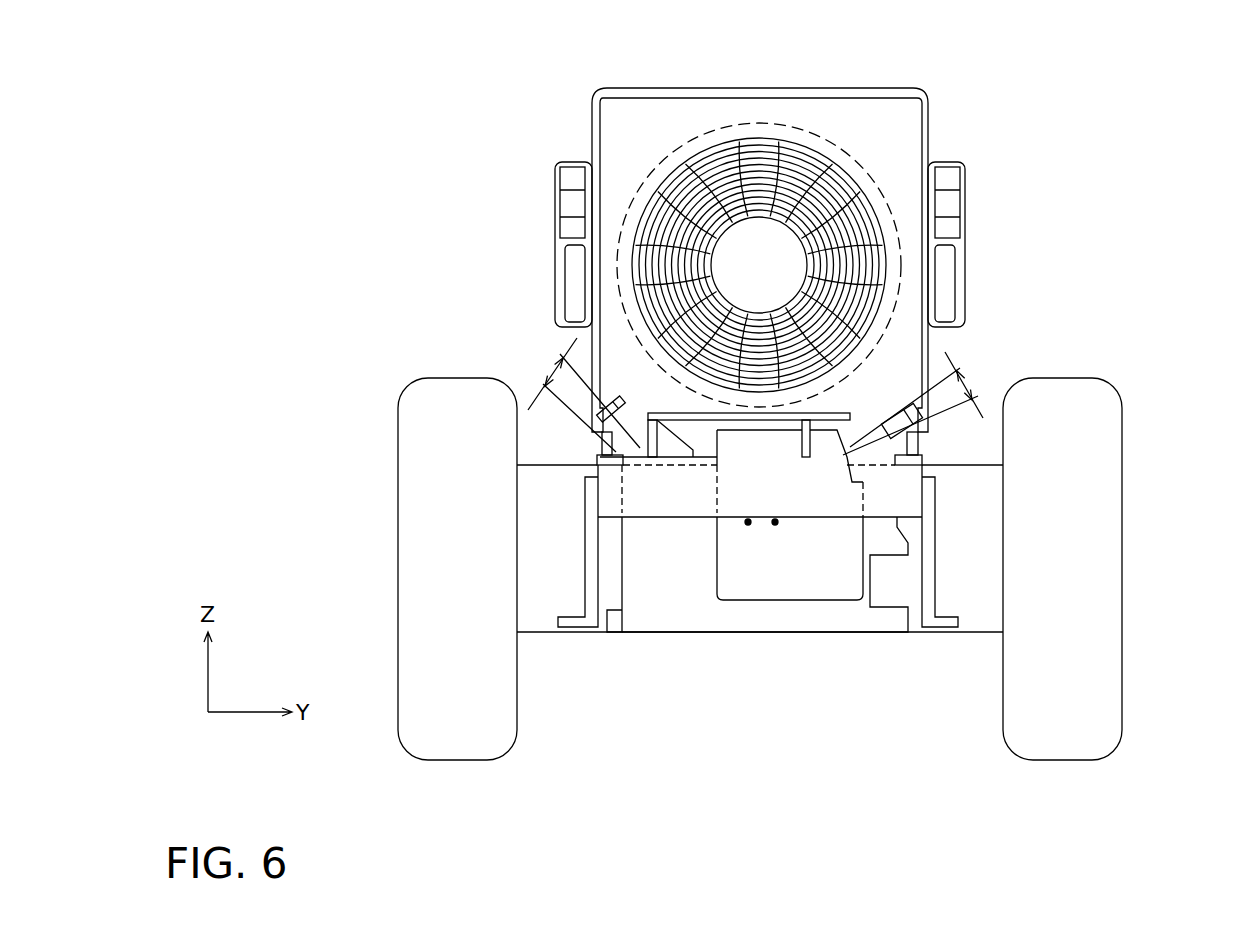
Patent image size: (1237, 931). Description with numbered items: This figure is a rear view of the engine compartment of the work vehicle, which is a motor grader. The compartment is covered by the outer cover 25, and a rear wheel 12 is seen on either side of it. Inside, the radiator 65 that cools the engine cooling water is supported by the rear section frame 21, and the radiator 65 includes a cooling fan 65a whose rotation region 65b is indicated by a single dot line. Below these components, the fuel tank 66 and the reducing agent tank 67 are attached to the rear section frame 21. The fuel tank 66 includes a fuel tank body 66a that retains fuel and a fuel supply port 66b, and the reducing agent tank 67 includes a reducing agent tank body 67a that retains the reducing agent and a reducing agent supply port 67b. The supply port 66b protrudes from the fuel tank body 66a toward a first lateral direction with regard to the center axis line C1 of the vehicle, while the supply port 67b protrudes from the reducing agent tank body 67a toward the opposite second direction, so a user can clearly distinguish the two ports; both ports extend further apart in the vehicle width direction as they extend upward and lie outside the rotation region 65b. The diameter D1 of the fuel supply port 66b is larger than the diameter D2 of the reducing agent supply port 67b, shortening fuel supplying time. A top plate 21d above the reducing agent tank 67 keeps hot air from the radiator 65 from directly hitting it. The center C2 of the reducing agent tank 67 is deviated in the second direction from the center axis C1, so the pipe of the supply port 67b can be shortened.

The rear wheels 12 is at (432, 460).
The rear section frame 21 is at (910, 500).
The top plate 21d is at (673, 418).
The outer cover 25 is at (930, 120).
The radiator 65 is at (632, 147).
The cooling fan 65a is at (868, 262).
The rotation region 65b is at (815, 140).
The fuel tank 66 is at (742, 591).
The fuel tank body 66a is at (661, 568).
The fuel supply port 66b is at (630, 420).
The reducing agent tank 67 is at (818, 594).
The reducing agent tank body 67a is at (832, 545).
The reducing agent supply port 67b is at (895, 422).
The center axis line C1 is at (748, 524).
The center of the reducing agent tank C2 is at (775, 524).
The diameter of the fuel supply port D1 is at (580, 395).
The diameter of the reducing agent supply port D2 is at (922, 403).